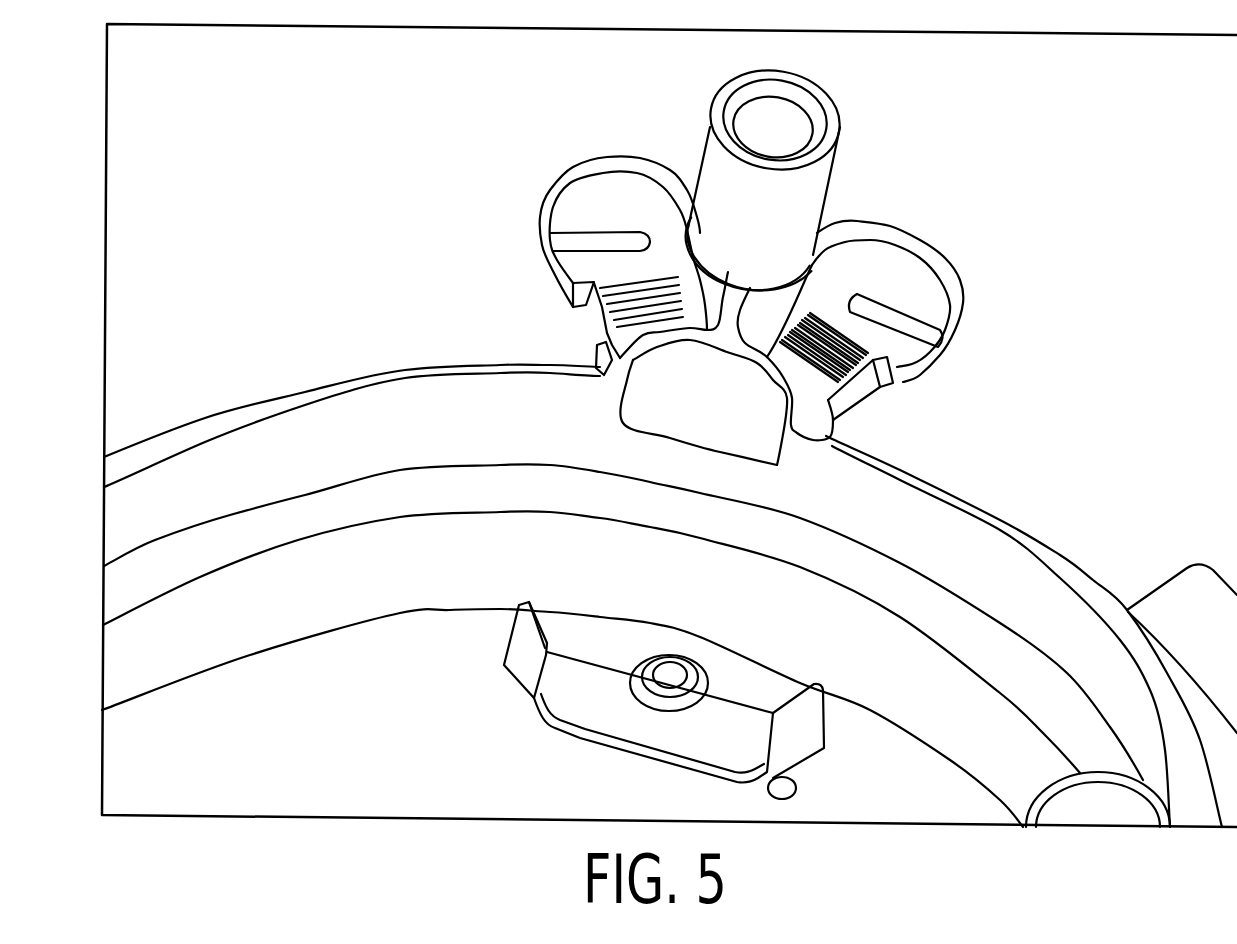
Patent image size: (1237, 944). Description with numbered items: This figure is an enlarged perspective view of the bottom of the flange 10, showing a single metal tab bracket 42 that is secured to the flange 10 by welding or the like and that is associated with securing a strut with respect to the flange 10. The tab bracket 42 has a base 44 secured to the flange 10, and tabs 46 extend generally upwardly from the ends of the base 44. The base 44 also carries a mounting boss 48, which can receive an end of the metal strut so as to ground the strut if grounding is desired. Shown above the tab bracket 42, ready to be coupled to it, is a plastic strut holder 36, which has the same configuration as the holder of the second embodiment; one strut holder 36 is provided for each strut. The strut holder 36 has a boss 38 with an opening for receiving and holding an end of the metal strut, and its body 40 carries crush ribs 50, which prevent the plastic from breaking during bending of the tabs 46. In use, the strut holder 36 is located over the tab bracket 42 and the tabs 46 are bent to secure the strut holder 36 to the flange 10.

The flange 10 is at (548, 795).
The strut holder 36 is at (721, 422).
The boss 38 is at (767, 235).
The body 40 is at (900, 347).
The tab bracket 42 is at (733, 684).
The base 44 is at (621, 724).
The tabs 46 is at (805, 733).
The mounting boss 48 is at (673, 693).
The crush ribs 50 is at (825, 453).